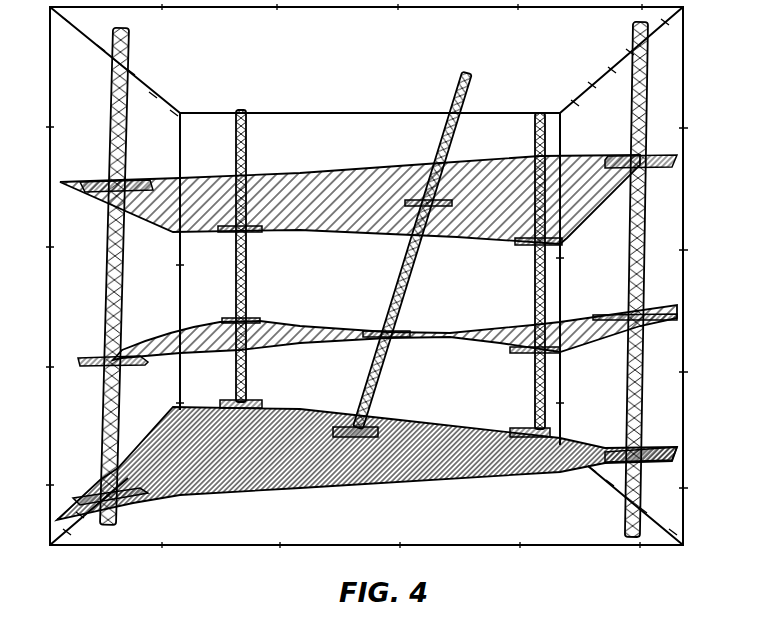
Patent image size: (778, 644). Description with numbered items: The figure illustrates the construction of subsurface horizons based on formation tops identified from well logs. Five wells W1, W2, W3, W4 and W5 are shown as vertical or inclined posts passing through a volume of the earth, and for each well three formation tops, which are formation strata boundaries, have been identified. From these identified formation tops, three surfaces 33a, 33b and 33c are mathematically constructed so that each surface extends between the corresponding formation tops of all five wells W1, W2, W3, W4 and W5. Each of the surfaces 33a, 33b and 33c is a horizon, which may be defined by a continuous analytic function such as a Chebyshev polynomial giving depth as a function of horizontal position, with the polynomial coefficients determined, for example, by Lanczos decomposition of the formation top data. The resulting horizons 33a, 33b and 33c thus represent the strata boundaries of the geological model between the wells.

The surface 33a is at (345, 172).
The surface 33b is at (327, 325).
The surface 33c is at (400, 432).
The well W1 is at (123, 300).
The well W2 is at (247, 262).
The well W3 is at (392, 292).
The well W4 is at (535, 290).
The well W5 is at (630, 265).